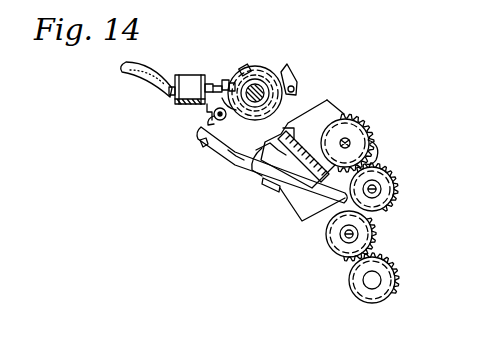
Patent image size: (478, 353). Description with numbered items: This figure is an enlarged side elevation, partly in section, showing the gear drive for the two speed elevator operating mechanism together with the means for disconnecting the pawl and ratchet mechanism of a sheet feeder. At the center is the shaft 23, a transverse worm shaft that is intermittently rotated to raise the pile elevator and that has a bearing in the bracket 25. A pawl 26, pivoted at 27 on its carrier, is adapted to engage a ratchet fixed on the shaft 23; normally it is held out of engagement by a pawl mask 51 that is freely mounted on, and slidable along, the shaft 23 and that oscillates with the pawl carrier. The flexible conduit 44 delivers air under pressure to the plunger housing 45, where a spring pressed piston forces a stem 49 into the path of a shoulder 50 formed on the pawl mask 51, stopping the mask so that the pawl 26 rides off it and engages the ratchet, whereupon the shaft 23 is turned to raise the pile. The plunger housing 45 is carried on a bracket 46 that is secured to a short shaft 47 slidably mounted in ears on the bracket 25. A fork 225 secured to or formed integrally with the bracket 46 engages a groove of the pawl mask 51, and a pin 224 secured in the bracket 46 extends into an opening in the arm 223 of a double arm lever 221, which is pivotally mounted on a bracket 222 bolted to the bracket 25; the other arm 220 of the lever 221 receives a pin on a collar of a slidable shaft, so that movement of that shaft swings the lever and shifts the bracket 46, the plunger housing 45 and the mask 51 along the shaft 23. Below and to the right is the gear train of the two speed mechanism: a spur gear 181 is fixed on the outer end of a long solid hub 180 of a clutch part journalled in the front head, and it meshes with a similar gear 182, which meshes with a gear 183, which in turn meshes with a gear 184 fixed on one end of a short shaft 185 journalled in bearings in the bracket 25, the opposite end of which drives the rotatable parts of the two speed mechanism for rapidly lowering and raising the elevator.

The flexible conduit 44 is at (121, 80).
The plunger housing 45 is at (186, 74).
The bracket 46 is at (207, 110).
The short shaft 47 is at (206, 125).
The stem 49 is at (223, 79).
The shoulder 50 is at (229, 83).
The pawl mask 51 is at (259, 71).
The shaft 23 is at (268, 100).
The bracket 25 is at (302, 222).
The pawl 26 is at (293, 78).
The pivot 27 is at (296, 89).
The hub 180 is at (370, 281).
The spur gear 181 is at (399, 280).
The gear 182 is at (328, 239).
The gear 183 is at (397, 182).
The gear 184 is at (366, 127).
The short shaft 185 is at (350, 143).
The arm 220 is at (292, 205).
The double arm lever 221 is at (262, 183).
The bracket 222 is at (252, 170).
The arm 223 is at (236, 158).
The pin 224 is at (203, 146).
The fork 225 is at (233, 110).